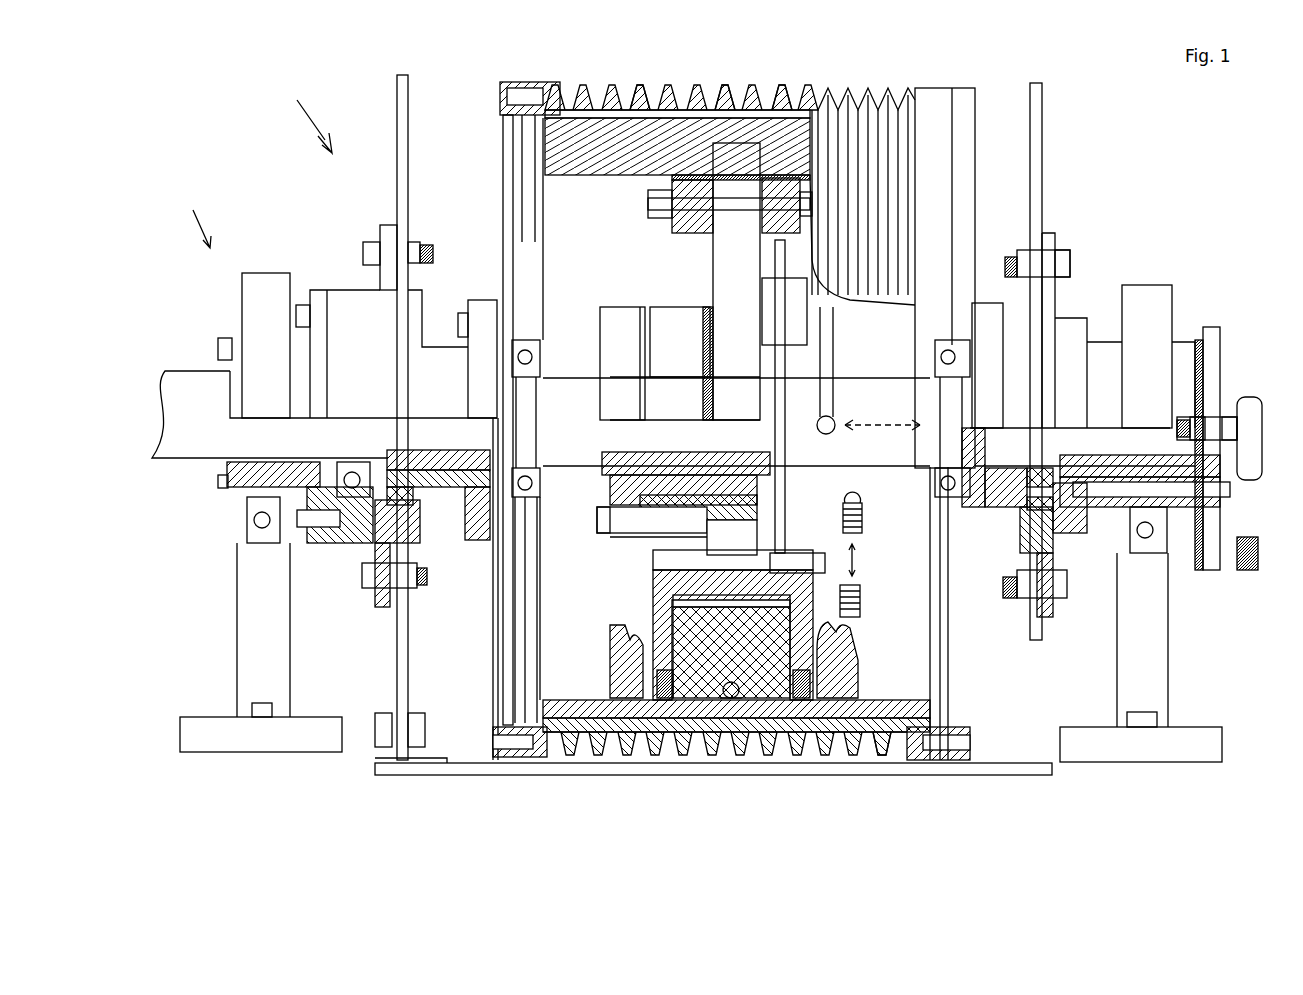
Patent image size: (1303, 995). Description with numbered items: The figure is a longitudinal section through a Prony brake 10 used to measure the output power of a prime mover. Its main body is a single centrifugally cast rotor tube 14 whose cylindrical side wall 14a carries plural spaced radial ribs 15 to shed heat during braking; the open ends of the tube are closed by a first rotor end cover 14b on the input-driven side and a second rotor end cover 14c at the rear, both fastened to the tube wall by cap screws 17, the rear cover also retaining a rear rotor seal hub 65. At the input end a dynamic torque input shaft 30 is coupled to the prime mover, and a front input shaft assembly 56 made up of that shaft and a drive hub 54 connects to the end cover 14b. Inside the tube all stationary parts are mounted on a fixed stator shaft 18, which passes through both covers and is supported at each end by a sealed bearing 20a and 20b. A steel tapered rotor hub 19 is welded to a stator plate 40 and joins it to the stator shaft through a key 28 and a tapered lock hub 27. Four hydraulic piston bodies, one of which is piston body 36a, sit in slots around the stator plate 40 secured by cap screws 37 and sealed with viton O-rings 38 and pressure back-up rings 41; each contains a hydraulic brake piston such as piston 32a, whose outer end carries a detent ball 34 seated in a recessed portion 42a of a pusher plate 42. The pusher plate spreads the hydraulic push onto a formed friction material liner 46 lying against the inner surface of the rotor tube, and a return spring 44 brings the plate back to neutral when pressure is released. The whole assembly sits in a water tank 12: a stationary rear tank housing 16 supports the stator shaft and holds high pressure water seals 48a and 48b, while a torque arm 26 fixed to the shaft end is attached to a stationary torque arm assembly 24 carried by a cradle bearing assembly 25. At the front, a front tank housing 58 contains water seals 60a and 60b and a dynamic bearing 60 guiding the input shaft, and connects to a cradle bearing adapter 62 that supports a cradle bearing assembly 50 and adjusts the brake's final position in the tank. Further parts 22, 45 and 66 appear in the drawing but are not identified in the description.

The Prony brake 10 is at (304, 117).
The water tank 12 is at (400, 135).
The rotor tube 14 is at (648, 70).
The cylindrical side wall 14a is at (650, 105).
The first rotor end cover 14b is at (510, 130).
The second rotor end cover 14c is at (958, 100).
The radial ribs 15 is at (725, 83).
The rear tank housing 16 is at (1067, 333).
The cap screws 17 is at (515, 85).
The stator shaft 18 is at (882, 452).
The tapered rotor hub 19 is at (690, 350).
The sealed bearing 20a is at (538, 470).
The sealed bearing 20b is at (940, 520).
The hub block 22 is at (1100, 350).
The stationary torque arm assembly 24 is at (1213, 330).
The cradle bearing assembly 25 is at (1130, 530).
The torque arm 26 is at (1245, 535).
The tapered lock hub 27 is at (620, 307).
The key 28 is at (680, 462).
The dynamic torque input shaft 30 is at (207, 372).
The hydraulic brake piston 32a is at (697, 670).
The detent ball 34 is at (733, 750).
The hydraulic piston body 36a is at (663, 600).
The cap screws 37 is at (790, 557).
The viton O-rings 38 is at (647, 740).
The stator plate 40 is at (712, 258).
The pressure back-up rings 41 is at (650, 740).
The pusher plate 42 is at (860, 652).
The recessed portion 42a is at (730, 737).
The return spring 44 is at (845, 510).
The tooth 45 is at (890, 747).
The formed friction material liner 46 is at (798, 757).
The high pressure water seal 48a is at (1045, 470).
The high pressure water seal 48b is at (1020, 515).
The cradle bearing assembly 50 is at (262, 283).
The drive hub 54 is at (485, 310).
The front input shaft assembly 56 is at (260, 470).
The front tank housing 58 is at (387, 232).
The dynamic bearing 60 is at (370, 462).
The high pressure water seal 60a is at (375, 545).
The high pressure water seal 60b is at (423, 495).
The cradle bearing adapter 62 is at (322, 298).
The rear rotor seal hub 65 is at (985, 320).
The base plate 66 is at (530, 762).